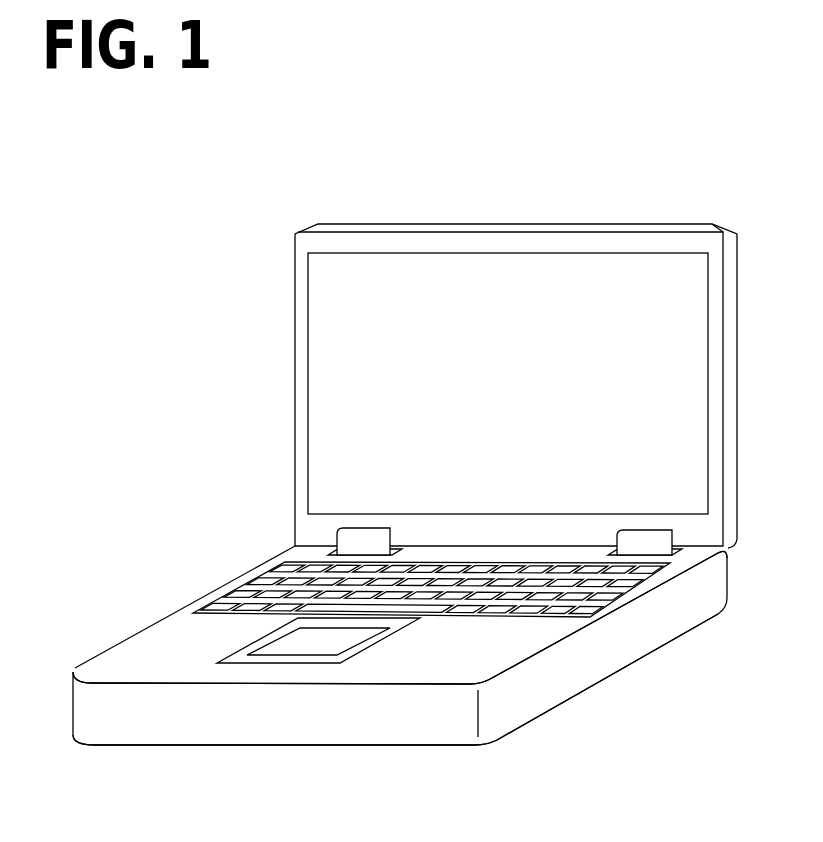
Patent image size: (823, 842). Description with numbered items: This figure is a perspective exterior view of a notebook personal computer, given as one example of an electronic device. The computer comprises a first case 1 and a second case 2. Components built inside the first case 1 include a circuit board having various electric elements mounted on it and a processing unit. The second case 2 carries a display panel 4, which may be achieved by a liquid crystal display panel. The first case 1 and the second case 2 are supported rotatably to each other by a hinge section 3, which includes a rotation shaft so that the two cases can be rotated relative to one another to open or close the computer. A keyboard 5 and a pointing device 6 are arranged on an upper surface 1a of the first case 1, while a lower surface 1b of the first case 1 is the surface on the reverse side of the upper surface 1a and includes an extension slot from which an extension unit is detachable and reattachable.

The first case 1 is at (565, 675).
The upper surface 1a is at (176, 644).
The lower surface 1b is at (343, 748).
The second case 2 is at (294, 381).
The hinge section 3 is at (350, 540).
The display panel 4 is at (320, 313).
The keyboard 5 is at (270, 573).
The pointing device 6 is at (285, 648).